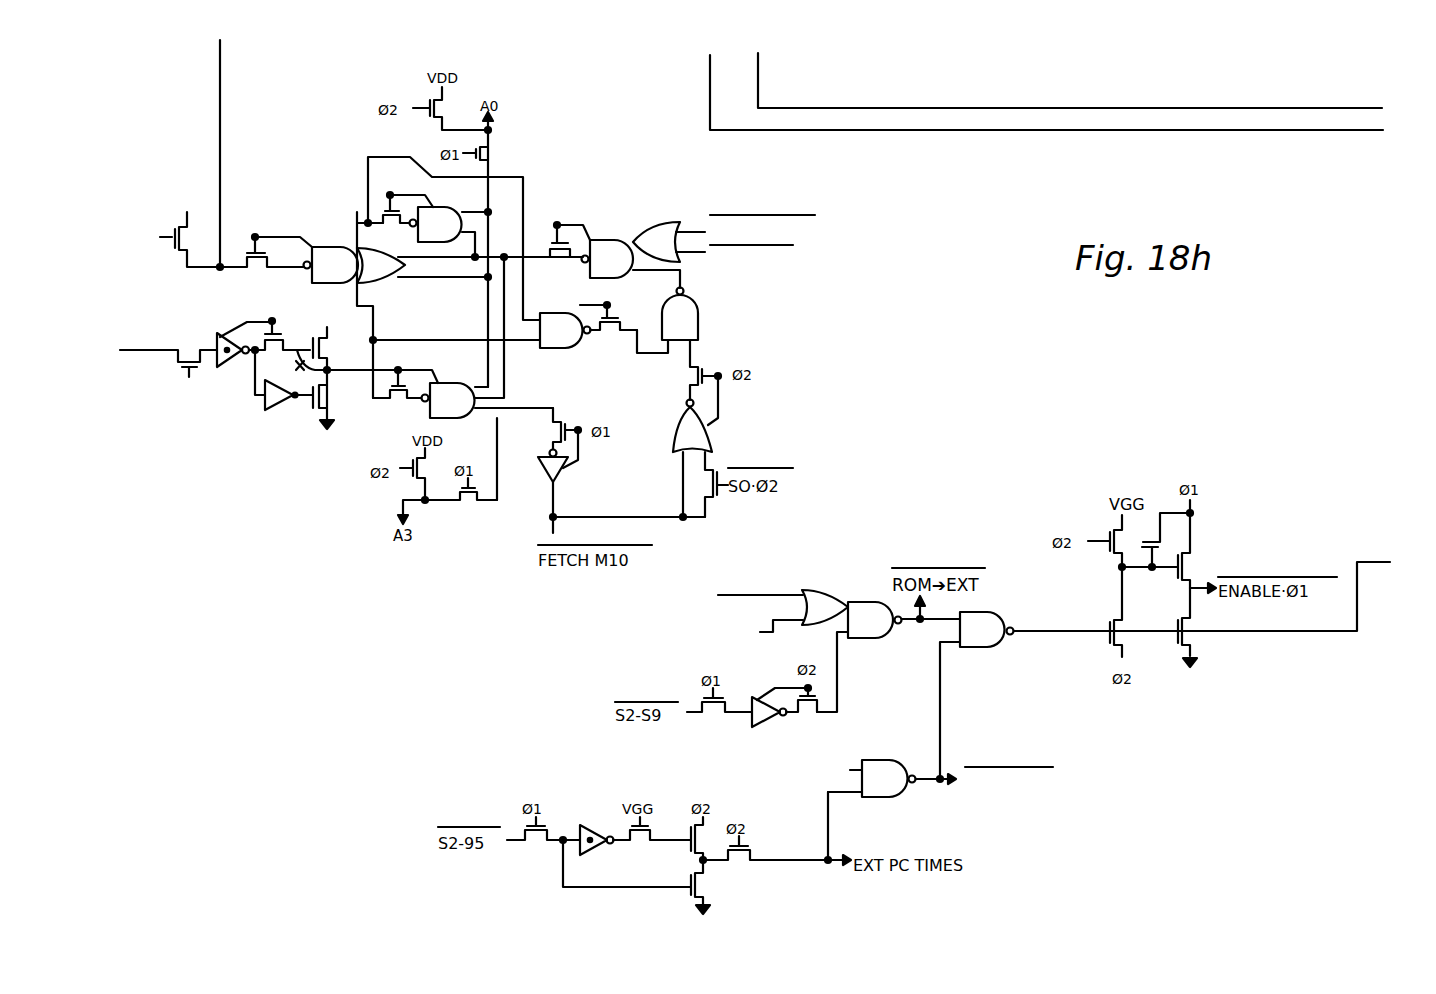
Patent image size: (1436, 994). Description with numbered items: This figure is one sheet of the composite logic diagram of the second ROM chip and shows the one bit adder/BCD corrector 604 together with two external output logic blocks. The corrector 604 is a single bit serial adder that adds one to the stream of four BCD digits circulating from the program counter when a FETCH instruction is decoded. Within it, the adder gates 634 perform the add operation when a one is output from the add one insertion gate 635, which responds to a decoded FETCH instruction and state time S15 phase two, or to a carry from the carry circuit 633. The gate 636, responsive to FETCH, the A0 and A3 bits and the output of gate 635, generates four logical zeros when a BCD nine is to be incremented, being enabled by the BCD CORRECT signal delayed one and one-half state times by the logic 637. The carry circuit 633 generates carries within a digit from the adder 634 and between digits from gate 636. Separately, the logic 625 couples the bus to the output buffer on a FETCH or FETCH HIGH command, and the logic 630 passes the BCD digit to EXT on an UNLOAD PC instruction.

The one bit adder/BCD corrector 604 is at (287, 482).
The logic 625 is at (902, 676).
The logic 630 is at (808, 830).
The carry circuit 633 is at (561, 346).
The adder gates 634 is at (346, 201).
The add one insertion gate 635 is at (627, 235).
The gate 636 is at (455, 393).
The logic 637 is at (240, 407).